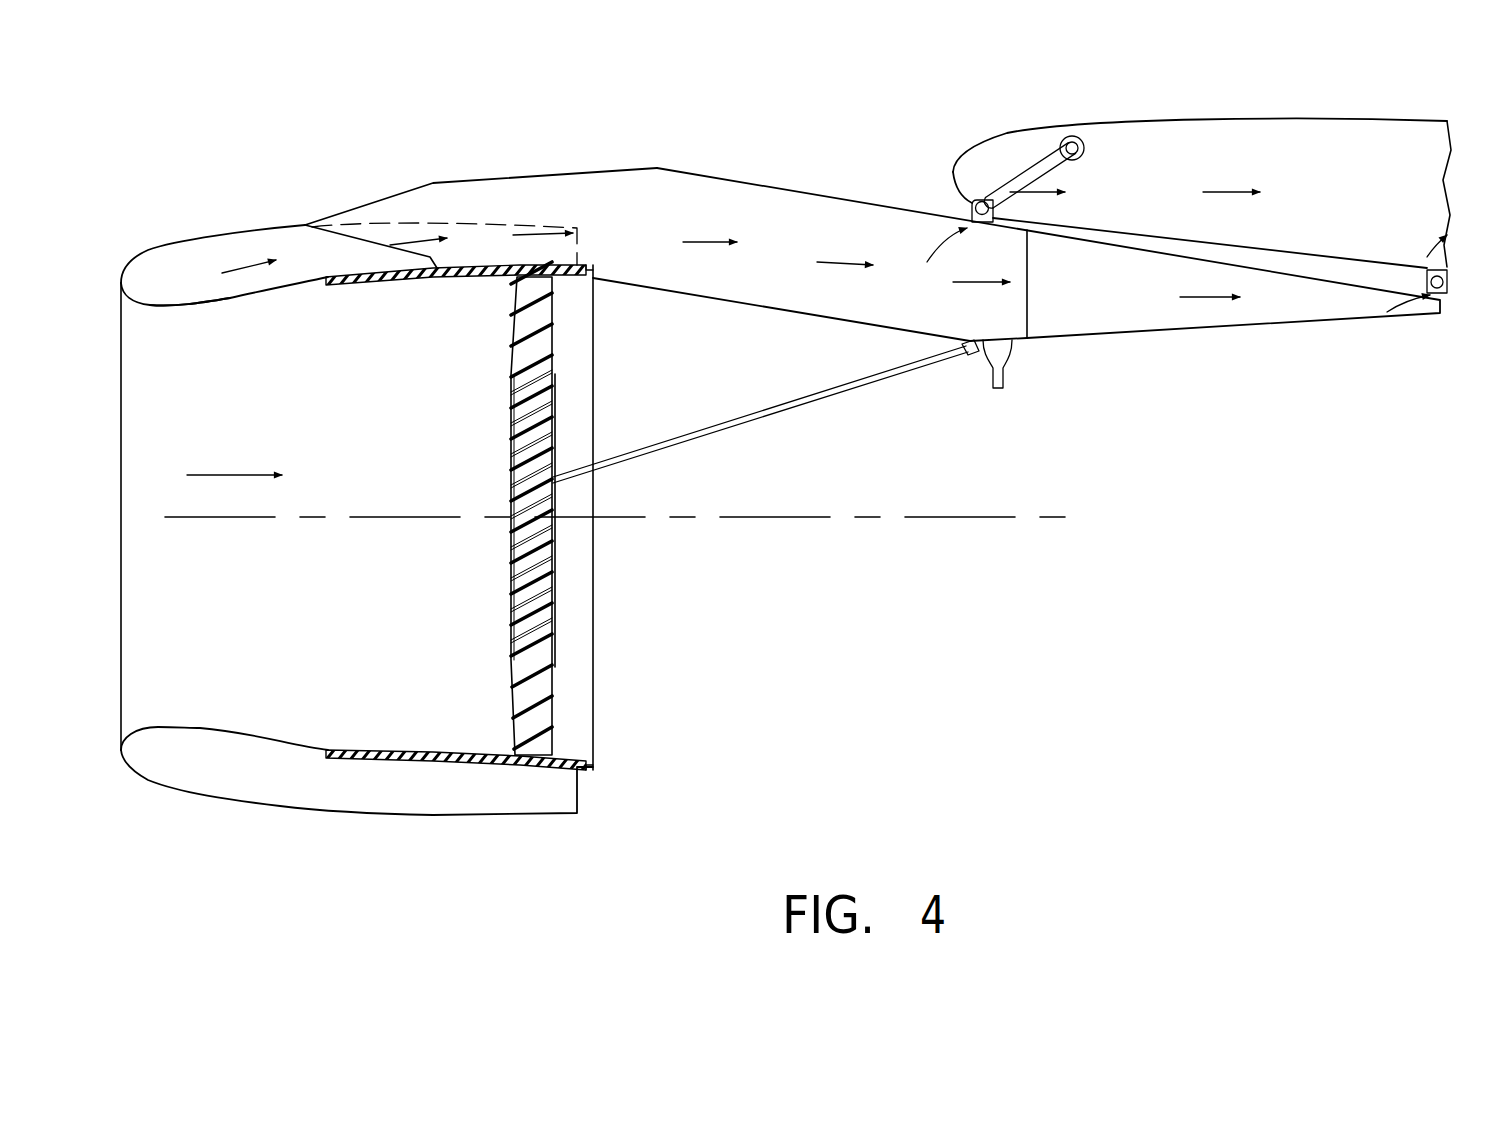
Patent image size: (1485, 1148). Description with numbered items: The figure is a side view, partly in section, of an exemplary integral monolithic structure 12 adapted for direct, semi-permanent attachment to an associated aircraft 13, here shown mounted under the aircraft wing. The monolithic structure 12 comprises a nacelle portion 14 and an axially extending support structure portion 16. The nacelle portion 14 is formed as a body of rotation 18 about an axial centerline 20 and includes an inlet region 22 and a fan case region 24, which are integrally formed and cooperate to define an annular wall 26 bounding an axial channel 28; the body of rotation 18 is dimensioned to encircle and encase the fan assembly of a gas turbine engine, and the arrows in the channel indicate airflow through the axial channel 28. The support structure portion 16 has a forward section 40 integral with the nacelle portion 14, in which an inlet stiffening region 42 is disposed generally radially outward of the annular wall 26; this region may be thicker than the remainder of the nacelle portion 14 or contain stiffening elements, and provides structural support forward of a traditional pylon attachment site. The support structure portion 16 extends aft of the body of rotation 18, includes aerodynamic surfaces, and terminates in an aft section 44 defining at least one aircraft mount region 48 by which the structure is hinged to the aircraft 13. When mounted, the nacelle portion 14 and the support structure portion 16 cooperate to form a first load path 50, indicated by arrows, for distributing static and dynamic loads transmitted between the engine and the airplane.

The monolithic structure 12 is at (243, 140).
The aircraft 13 is at (1155, 130).
The nacelle portion 14 is at (227, 247).
The support structure portion 16 is at (755, 290).
The body of rotation 18 is at (548, 800).
The axial centerline 20 is at (820, 520).
The inlet region 22 is at (243, 823).
The fan case region 24 is at (445, 838).
The annular wall 26 is at (220, 292).
The axial channel 28 is at (225, 472).
The forward section 40 is at (393, 213).
The inlet stiffening region 42 is at (457, 197).
The aft section 44 is at (727, 200).
The aircraft mount region 48 is at (975, 207).
The first load path 50 is at (527, 230).